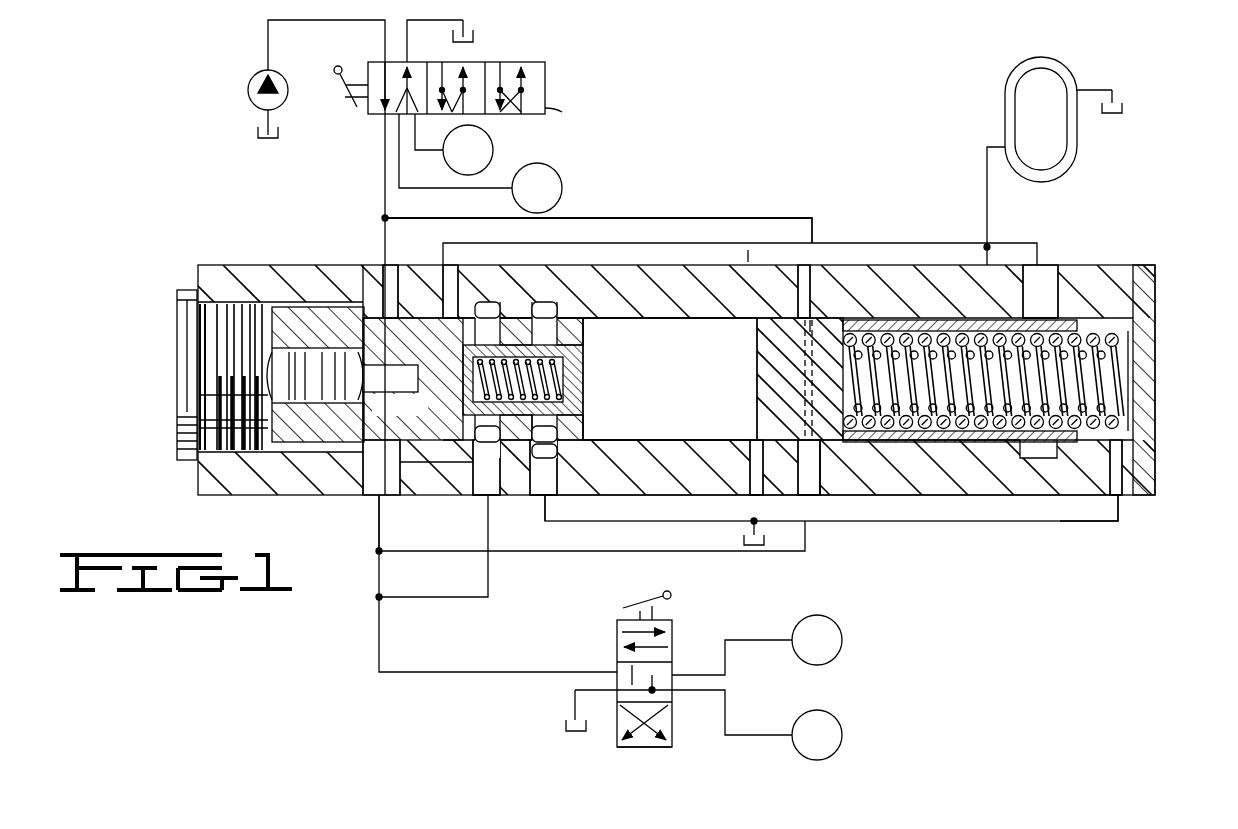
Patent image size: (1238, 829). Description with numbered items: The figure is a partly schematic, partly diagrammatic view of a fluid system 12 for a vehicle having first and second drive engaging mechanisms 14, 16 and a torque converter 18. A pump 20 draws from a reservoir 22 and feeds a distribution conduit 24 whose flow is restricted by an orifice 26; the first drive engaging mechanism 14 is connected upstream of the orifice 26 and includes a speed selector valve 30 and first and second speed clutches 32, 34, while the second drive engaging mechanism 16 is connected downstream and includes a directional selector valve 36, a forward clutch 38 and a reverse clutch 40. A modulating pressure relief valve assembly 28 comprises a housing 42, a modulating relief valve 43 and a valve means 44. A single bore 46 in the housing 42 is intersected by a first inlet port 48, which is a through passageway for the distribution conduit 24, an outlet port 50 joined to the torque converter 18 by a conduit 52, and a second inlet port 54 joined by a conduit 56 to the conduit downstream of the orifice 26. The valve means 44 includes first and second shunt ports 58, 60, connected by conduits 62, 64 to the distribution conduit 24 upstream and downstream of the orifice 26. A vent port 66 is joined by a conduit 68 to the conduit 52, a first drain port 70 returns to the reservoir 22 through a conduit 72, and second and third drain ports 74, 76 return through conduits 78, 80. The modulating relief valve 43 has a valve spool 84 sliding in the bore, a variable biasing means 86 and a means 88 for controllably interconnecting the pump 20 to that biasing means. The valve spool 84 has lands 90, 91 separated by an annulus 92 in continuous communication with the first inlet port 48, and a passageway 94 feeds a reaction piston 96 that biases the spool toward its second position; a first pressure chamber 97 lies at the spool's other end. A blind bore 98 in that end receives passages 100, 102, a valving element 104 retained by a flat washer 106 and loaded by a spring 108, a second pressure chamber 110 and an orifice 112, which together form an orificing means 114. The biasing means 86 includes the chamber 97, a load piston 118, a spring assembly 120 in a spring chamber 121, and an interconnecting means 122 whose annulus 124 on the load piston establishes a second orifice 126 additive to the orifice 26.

The fluid system 12 is at (856, 92).
The first drive engaging mechanism 14 is at (563, 57).
The second drive engaging mechanism 16 is at (598, 746).
The torque converter 18 is at (1078, 148).
The pump 20 is at (248, 90).
The reservoir 22 is at (283, 136).
The distribution conduit 24 is at (340, 22).
The orifice 26 is at (362, 232).
The modulating pressure relief valve assembly 28 is at (810, 158).
The speed selector valve 30 is at (576, 113).
The first speed clutch 32 is at (493, 143).
The second speed clutch 34 is at (562, 180).
The directional selector valve 36 is at (645, 748).
The forward clutch 38 is at (843, 640).
The reverse clutch 40 is at (843, 735).
The housing 42 is at (982, 492).
The modulating relief valve 43 is at (508, 500).
The valve means 44 is at (747, 303).
The single bore 46 is at (648, 424).
The first inlet port 48 is at (352, 270).
The outlet port 50 is at (448, 272).
The conduit 52 is at (595, 243).
The second inlet port 54 is at (478, 494).
The conduit 56 is at (490, 575).
The first shunt port 58 is at (817, 275).
The second shunt port 60 is at (815, 490).
The conduit 62 is at (680, 217).
The conduit 64 is at (620, 552).
The vent port 66 is at (1050, 265).
The conduit 68 is at (1030, 247).
The first drain port 70 is at (1125, 497).
The conduit 72 is at (1060, 522).
The second drain port 74 is at (557, 498).
The third drain port 76 is at (757, 478).
The conduit 78 is at (620, 521).
The conduit 80 is at (768, 512).
The valve spool 84 is at (313, 488).
The variable biasing means 86 is at (750, 260).
The means for controllably interconnecting 88 is at (561, 366).
The land 90 is at (553, 302).
The land 91 is at (308, 305).
The annulus 92 is at (364, 318).
The passageway 94 is at (390, 372).
The reaction piston 96 is at (280, 455).
The first pressure chamber 97 is at (670, 379).
The blind bore 98 is at (460, 296).
The passage 100 is at (438, 474).
The passage 102 is at (560, 455).
The valving element 104 is at (584, 325).
The flat washer 106 is at (575, 398).
The spring 108 is at (548, 381).
The second pressure chamber 110 is at (375, 485).
The orifice 112 is at (395, 391).
The orificing means 114 is at (445, 466).
The load piston 118 is at (773, 405).
The spring assembly 120 is at (1122, 352).
The spring chamber 121 is at (1134, 437).
The interconnecting means 122 is at (837, 450).
The annulus 124 is at (812, 322).
The second orifice 126 is at (810, 442).